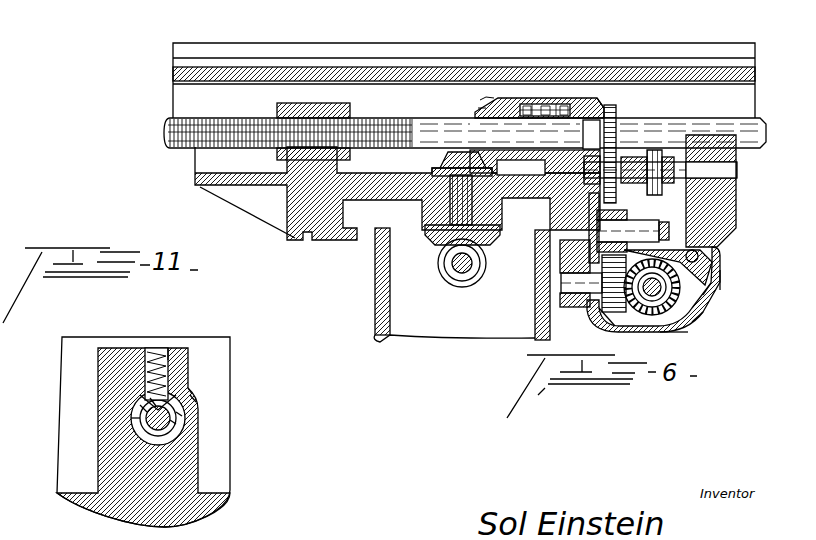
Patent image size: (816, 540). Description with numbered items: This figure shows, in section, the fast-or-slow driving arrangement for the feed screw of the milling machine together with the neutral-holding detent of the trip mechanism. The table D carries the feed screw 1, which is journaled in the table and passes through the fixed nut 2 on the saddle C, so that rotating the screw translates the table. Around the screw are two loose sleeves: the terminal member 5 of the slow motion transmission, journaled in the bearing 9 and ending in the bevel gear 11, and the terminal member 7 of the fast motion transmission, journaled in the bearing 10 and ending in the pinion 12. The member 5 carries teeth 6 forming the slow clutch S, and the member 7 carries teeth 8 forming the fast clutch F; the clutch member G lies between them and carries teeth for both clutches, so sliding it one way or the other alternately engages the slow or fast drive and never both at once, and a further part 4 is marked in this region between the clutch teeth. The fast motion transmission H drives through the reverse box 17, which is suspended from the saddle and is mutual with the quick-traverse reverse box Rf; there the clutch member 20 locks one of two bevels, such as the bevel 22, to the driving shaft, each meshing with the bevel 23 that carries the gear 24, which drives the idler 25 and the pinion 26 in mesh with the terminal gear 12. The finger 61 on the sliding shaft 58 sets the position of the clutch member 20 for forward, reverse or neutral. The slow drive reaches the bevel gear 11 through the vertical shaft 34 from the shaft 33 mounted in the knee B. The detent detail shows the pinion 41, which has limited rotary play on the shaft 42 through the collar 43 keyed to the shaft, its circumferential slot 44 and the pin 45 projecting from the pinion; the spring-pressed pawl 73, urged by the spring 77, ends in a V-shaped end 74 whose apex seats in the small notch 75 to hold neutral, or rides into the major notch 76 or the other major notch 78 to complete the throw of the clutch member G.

In FIG. 6, the table D is at (318, 48).
In FIG. 6, the feed screw 1 is at (430, 117).
In FIG. 6, the fixed nut 2 is at (350, 112).
In FIG. 6, the saddle C is at (396, 173).
In FIG. 6, the terminal member of the slow motion transmission 5 is at (488, 96).
In FIG. 6, the bevel gear 11 is at (478, 108).
In FIG. 6, the bearing 9 is at (497, 105).
In FIG. 6, the slow clutch S is at (529, 108).
In FIG. 6, the clutch member G is at (549, 108).
In FIG. 6, the fast clutch F is at (566, 108).
In FIG. 6, the bearing 10 is at (600, 101).
In FIG. 6, the pinion 12 is at (617, 108).
In FIG. 6, the terminal member of the fast motion transmission 7 is at (591, 134).
In FIG. 6, the teeth 6 is at (507, 168).
In FIG. 6, the nut 4 is at (521, 168).
In FIG. 6, the teeth 8 is at (535, 168).
In FIG. 6, the pinion 26 is at (655, 185).
In FIG. 6, the idler 25 is at (622, 212).
In FIG. 6, the vertical shaft 34 is at (471, 214).
In FIG. 6, the shaft 33 is at (463, 272).
In FIG. 6, the knee B is at (390, 303).
In FIG. 6, the gear 24 is at (586, 308).
In FIG. 6, the fast motion transmission H is at (653, 301).
In FIG. 6, the bevel 22 is at (655, 327).
In FIG. 6, the finger 61 is at (699, 254).
In FIG. 6, the reverse box of the quick traverse motion Rf is at (721, 280).
In FIG. 6, the sliding shaft 58 is at (708, 292).
In FIG. 6, the reverse box 17 is at (695, 312).
In FIG. 6, the clutch member 20 is at (670, 326).
In FIG. 6, the bevel 23 is at (616, 330).
In FIG. 11, the pinion 41 is at (172, 437).
In FIG. 11, the shaft 42 is at (150, 412).
In FIG. 11, the spring-pressed wedge or pawl 73 is at (160, 347).
In FIG. 11, the spring 77 is at (188, 368).
In FIG. 11, the V-shaped end 74 is at (190, 378).
In FIG. 11, the major notch 78 is at (192, 392).
In FIG. 11, the major notch 76 is at (140, 410).
In FIG. 11, the small notch 75 is at (148, 404).
In FIG. 11, the collar 43 is at (135, 418).
In FIG. 11, the circumferential slot 44 is at (182, 415).
In FIG. 11, the pin 45 is at (173, 423).